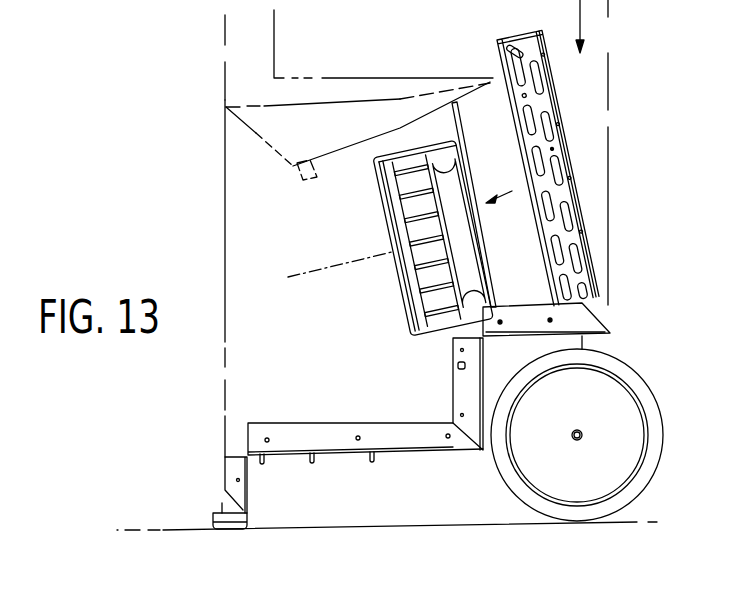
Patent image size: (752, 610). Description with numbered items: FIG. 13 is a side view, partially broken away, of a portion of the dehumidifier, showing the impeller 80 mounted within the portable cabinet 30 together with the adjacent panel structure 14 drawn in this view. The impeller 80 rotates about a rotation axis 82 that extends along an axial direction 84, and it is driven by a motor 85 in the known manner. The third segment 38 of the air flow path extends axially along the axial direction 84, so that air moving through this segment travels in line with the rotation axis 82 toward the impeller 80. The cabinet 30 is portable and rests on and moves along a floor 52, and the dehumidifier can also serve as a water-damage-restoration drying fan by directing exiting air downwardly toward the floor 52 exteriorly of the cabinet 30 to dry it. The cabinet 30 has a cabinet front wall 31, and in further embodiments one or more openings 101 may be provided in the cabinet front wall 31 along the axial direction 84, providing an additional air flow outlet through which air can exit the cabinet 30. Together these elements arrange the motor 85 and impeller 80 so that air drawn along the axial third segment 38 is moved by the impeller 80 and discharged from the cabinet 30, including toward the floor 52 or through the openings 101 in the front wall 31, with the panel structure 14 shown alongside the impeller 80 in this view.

The perforated panel 14 is at (560, 180).
The cabinet 30 is at (224, 39).
The cabinet front wall 31 is at (225, 190).
The third segment 38 is at (522, 185).
The floor 52 is at (163, 530).
The impeller 80 is at (408, 172).
The rotation axis 82 is at (393, 252).
The axial direction 84 is at (320, 267).
The motor 85 is at (395, 232).
The openings 101 is at (225, 345).